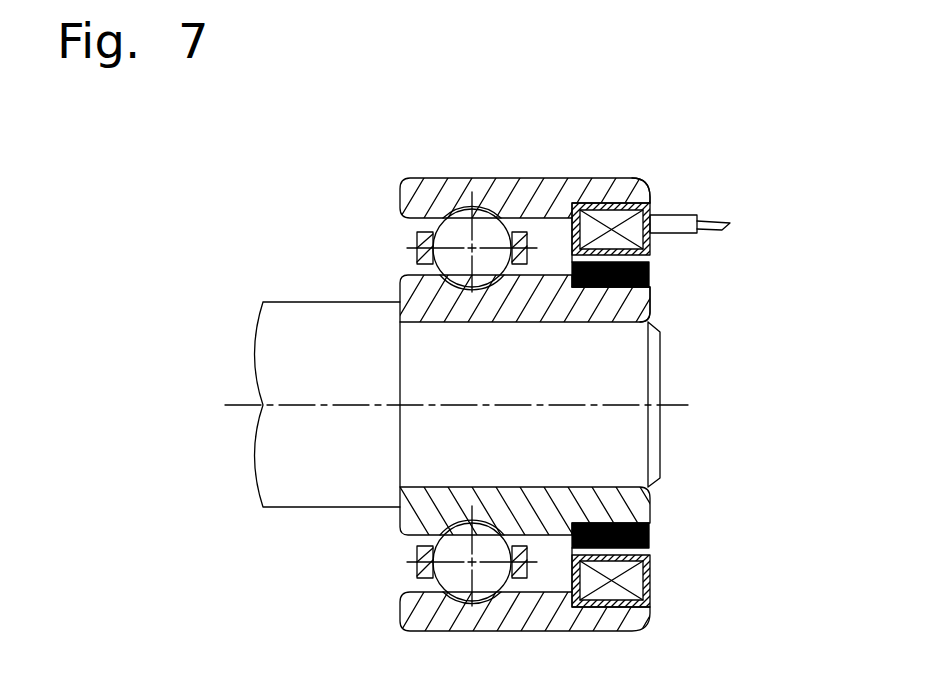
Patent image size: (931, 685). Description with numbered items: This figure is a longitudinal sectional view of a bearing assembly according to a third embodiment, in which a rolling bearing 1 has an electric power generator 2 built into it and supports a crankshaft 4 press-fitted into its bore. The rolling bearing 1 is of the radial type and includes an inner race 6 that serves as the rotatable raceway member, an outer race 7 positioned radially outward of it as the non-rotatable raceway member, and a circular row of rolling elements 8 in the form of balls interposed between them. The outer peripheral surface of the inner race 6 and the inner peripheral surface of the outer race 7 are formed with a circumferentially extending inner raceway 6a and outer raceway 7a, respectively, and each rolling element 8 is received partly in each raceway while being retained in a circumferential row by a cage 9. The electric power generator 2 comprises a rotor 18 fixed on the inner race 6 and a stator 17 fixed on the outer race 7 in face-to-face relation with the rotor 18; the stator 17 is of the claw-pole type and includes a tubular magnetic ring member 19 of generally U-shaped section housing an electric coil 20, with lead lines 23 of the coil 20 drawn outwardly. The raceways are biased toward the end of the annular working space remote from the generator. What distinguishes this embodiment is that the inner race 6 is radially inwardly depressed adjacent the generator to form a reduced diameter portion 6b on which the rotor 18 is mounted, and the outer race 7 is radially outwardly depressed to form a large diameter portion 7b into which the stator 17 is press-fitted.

The rolling bearing 1 is at (365, 160).
The electric power generator 2 is at (647, 208).
The crankshaft 4 is at (325, 493).
The inner race 6 is at (400, 285).
The inner raceway 6a is at (444, 286).
The reduced diameter portion 6b is at (650, 312).
The outer race 7 is at (408, 208).
The outer raceway 7a is at (492, 224).
The large diameter portion 7b is at (627, 203).
The rolling element 8 is at (458, 226).
The cage 9 is at (417, 238).
The stator 17 is at (640, 200).
The rotor 18 is at (649, 272).
The ring member 19 is at (566, 245).
The electric coil 20 is at (611, 215).
The lead lines 23 is at (717, 233).